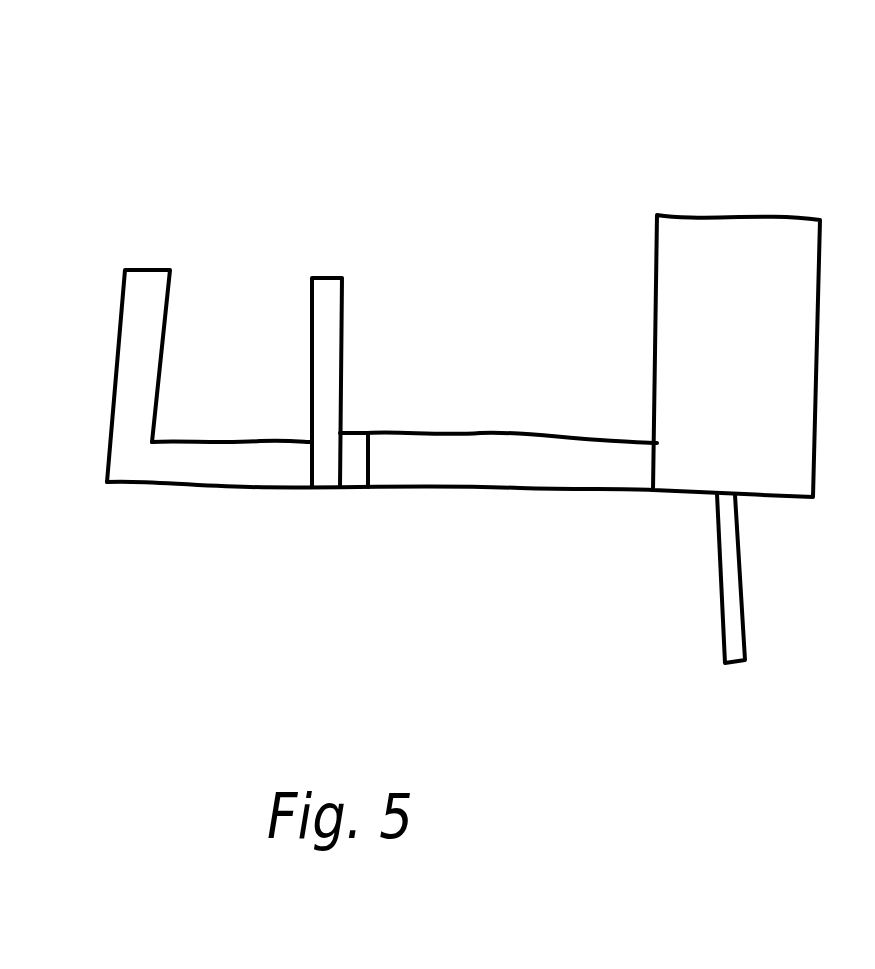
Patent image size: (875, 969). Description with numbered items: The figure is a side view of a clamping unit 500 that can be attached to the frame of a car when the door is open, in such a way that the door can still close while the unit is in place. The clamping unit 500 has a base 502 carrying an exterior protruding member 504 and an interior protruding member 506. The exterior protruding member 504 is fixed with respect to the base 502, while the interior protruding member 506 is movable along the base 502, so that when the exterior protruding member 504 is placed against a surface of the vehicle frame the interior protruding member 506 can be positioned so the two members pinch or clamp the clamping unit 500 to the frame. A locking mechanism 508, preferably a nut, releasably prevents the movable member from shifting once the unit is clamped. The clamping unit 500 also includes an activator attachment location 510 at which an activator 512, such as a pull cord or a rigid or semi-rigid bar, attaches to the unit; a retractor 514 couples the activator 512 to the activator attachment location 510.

The clamping unit 500 is at (434, 228).
The base 502 is at (443, 480).
The exterior protruding member 504 is at (140, 293).
The interior protruding member 506 is at (325, 298).
The locking mechanism 508 is at (368, 433).
The activator attachment location 510 is at (645, 498).
The activator 512 is at (732, 592).
The retractor 514 is at (736, 356).